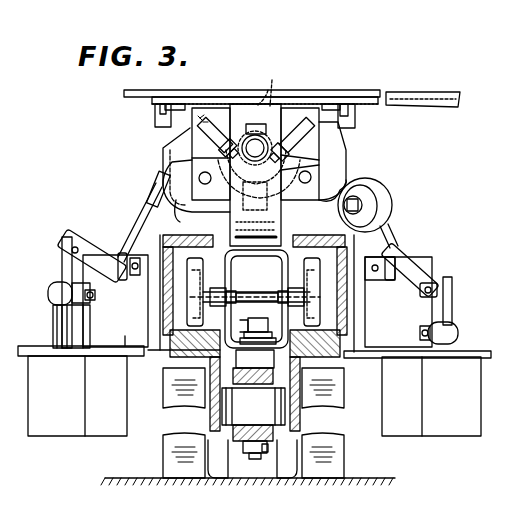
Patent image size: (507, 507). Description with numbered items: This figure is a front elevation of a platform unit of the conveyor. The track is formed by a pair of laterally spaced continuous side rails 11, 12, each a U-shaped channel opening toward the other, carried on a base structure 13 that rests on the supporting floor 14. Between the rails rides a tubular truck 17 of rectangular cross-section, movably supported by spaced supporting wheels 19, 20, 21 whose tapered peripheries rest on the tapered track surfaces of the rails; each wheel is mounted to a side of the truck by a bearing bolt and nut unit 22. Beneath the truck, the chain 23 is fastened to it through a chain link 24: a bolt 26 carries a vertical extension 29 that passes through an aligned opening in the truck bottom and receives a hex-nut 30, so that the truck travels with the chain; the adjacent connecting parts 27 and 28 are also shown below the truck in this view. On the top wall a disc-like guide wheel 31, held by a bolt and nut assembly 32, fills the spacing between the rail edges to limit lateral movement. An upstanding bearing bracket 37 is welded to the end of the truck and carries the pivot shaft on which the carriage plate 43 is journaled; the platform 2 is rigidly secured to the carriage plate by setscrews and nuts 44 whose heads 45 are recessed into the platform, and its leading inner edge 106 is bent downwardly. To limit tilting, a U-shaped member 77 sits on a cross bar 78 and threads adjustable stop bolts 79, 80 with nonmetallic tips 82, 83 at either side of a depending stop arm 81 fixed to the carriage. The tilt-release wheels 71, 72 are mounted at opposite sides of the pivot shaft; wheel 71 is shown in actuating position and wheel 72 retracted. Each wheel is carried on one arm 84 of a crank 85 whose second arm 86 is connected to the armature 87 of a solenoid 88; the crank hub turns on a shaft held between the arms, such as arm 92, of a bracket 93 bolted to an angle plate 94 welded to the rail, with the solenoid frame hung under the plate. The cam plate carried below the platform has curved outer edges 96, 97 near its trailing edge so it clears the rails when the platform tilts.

The platform 2 is at (222, 95).
The side rail 11 is at (168, 320).
The side rail 12 is at (342, 325).
The base structure 13 is at (172, 470).
The supporting floor 14 is at (385, 478).
The tubular truck 17 is at (226, 262).
The supporting wheel 19 is at (306, 314).
The supporting wheel 20 is at (326, 253).
The supporting wheel 21 is at (192, 286).
The bearing bolt and nut unit 22 is at (274, 288).
The chain 23 is at (249, 455).
The chain link 24 is at (258, 386).
The bolt 26 is at (260, 465).
The washer 27 is at (268, 450).
The support blocks 28 is at (212, 416).
The vertical extension 29 is at (257, 295).
The hex-nut 30 is at (238, 332).
The guide wheel 31 is at (288, 252).
The bolt and nut assembly 32 is at (238, 226).
The bearing bracket 37 is at (282, 204).
The carriage plate 43 is at (248, 490).
The setscrews and nuts 44 is at (158, 114).
The heads 45 is at (176, 97).
The wheel 71 is at (196, 197).
The wheel 72 is at (388, 188).
The U-shaped member 77 is at (300, 166).
The cross bar 78 is at (232, 206).
The adjustable stop bolt 79 is at (319, 144).
The adjustable stop bolt 80 is at (182, 150).
The stop arm 81 is at (281, 85).
The nonmetallic tip 82 is at (292, 118).
The nonmetallic tip 83 is at (259, 104).
The arm 84 is at (115, 228).
The crank 85 is at (104, 230).
The second arm 86 is at (83, 265).
The armature 87 is at (53, 328).
The solenoid 88 is at (70, 435).
The arm 92 is at (134, 280).
The bracket 93 is at (130, 346).
The angle plate 94 is at (92, 352).
The curved edge 96 is at (332, 200).
The curved edge 97 is at (156, 205).
The leading inner edge 106 is at (446, 105).